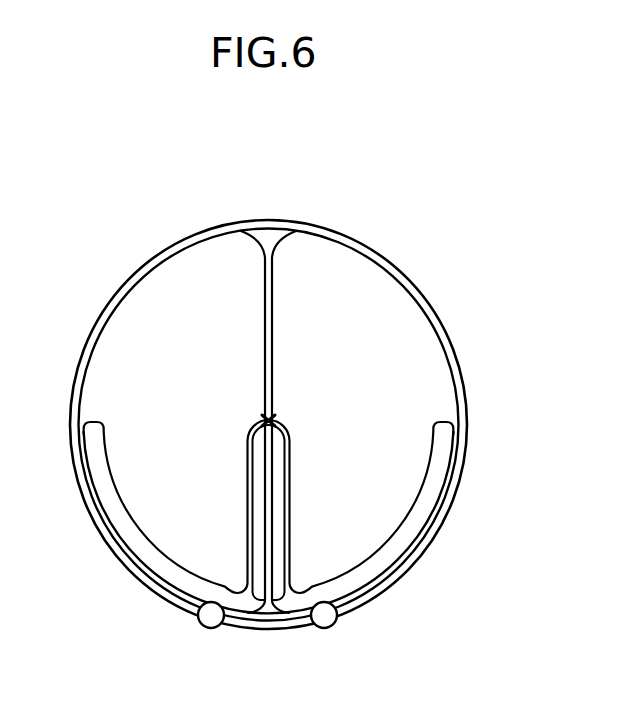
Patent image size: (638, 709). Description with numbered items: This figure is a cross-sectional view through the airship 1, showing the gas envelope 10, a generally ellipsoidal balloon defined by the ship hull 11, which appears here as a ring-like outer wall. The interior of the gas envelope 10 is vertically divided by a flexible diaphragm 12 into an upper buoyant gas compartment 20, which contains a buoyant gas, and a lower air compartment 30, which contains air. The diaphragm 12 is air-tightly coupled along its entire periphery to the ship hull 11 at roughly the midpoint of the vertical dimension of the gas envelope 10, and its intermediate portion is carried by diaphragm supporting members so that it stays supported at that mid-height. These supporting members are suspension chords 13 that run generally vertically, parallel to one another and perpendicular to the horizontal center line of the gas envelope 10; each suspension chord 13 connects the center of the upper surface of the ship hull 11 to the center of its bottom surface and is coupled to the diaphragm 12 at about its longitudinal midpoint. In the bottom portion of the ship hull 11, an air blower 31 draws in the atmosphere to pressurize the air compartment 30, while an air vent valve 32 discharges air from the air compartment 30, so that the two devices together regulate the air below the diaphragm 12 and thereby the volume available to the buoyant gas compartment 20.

The nozzle assembly 1 is at (158, 233).
The gas envelope 10 is at (428, 313).
The ship hull 11 is at (444, 352).
The diaphragm 12 is at (121, 522).
The suspension chords 13 is at (273, 380).
The buoyant gas compartment 20 is at (130, 336).
The air compartment 30 is at (141, 559).
The air blower 31 is at (202, 629).
The air vent valve 32 is at (340, 630).